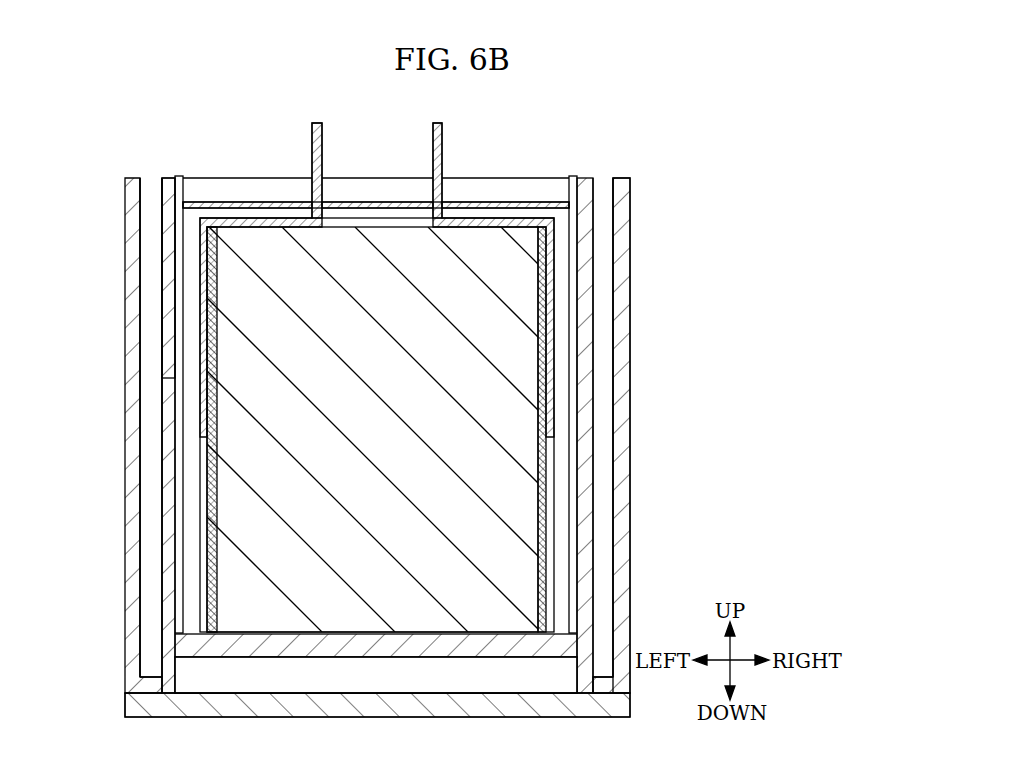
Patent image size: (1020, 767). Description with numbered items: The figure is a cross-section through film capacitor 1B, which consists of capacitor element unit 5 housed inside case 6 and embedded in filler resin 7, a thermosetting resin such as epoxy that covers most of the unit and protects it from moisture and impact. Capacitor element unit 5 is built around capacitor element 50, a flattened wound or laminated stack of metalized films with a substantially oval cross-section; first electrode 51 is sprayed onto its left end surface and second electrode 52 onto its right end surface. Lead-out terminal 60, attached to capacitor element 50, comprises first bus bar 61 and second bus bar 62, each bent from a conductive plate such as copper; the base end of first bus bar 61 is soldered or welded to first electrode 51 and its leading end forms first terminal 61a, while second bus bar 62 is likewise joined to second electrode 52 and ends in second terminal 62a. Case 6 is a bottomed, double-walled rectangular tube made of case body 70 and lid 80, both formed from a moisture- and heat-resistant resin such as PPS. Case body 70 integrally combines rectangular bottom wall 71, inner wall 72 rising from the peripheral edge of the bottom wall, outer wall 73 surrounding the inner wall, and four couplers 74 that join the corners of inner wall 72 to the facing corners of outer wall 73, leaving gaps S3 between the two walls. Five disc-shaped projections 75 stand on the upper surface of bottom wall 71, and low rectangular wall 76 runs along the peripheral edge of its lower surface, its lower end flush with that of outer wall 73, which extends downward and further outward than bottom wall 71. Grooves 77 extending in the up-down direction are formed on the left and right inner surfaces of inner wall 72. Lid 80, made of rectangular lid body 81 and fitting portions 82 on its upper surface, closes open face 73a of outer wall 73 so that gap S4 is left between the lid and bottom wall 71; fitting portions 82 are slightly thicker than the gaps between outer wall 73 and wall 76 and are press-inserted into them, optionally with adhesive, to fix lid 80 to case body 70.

The film capacitor 1B is at (647, 178).
The capacitor element unit 5 is at (562, 287).
The case 6 is at (633, 330).
The filler resin 7 is at (505, 205).
The capacitor element 50 is at (402, 240).
The first electrode 51 is at (210, 497).
The second electrode 52 is at (546, 497).
The lead-out terminal 60 is at (252, 216).
The first bus bar 61 is at (293, 216).
The first terminal 61a is at (322, 150).
The second bus bar 62 is at (462, 220).
The second terminal 62a is at (442, 150).
The case body 70 is at (597, 430).
The bottom wall 71 is at (473, 657).
The inner wall 72 is at (162, 275).
The outer wall 73 is at (130, 320).
The open face 73a is at (323, 688).
The couplers 74 is at (147, 470).
The projections 75 is at (235, 634).
The wall 76 is at (177, 668).
The grooves 77 is at (182, 243).
The lid 80 is at (125, 697).
The lid body 81 is at (627, 703).
The fitting portions 82 is at (602, 677).
The gaps S3 is at (153, 553).
The gap S4 is at (380, 680).